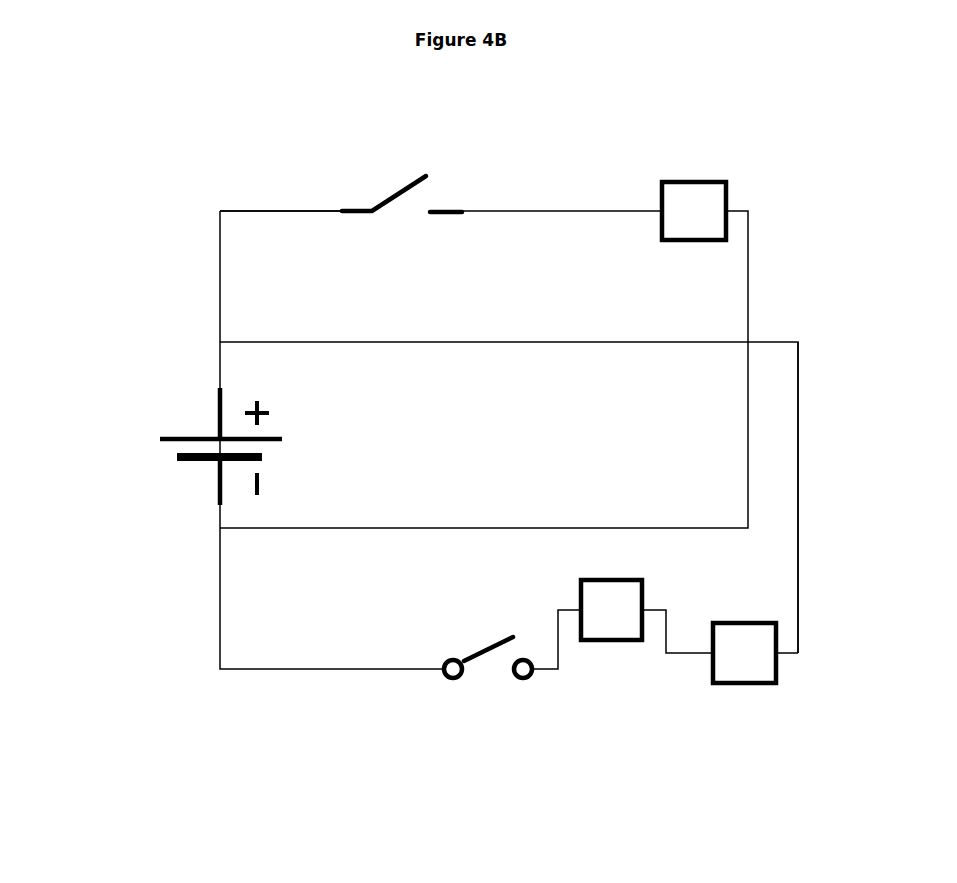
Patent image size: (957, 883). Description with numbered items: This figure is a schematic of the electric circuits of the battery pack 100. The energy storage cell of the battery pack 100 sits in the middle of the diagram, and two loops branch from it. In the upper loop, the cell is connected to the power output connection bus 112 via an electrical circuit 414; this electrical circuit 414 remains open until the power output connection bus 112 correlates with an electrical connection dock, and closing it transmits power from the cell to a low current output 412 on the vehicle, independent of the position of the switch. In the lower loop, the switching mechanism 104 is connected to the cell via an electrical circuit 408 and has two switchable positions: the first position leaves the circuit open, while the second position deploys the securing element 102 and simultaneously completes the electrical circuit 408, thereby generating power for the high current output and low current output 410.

The electrical circuit 414 is at (221, 208).
The power output connection bus 112 is at (402, 219).
The low current output 412 is at (694, 235).
The battery pack 100 is at (166, 453).
The electrical circuit 408 is at (799, 447).
The securing element 102 is at (610, 598).
The high current output and low current output 410 is at (743, 689).
The switching mechanism 104 is at (460, 680).